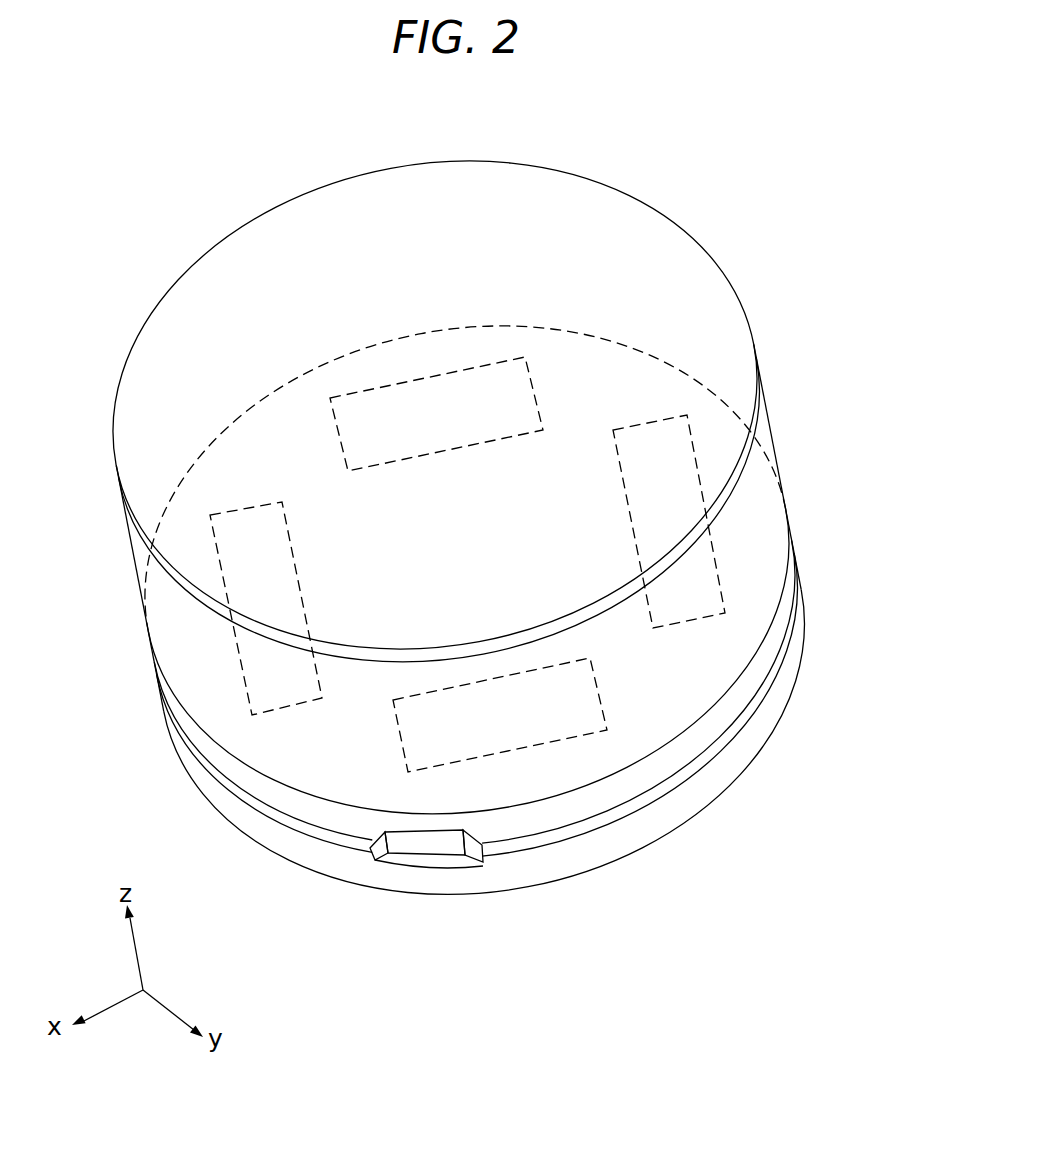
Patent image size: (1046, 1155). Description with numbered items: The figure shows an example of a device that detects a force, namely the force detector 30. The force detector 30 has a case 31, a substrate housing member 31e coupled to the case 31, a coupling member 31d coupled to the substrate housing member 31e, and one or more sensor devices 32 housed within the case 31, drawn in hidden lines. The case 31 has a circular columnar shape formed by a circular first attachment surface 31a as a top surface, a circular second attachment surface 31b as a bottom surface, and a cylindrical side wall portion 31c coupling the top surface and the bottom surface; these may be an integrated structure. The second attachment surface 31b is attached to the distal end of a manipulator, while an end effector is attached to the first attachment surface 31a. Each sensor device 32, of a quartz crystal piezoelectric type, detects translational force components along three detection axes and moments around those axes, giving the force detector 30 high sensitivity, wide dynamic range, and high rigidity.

The force detector 30 is at (670, 158).
The case 31 is at (728, 278).
The first attachment surface 31a is at (178, 341).
The second attachment surface 31b is at (765, 740).
The side wall portion 31c is at (757, 493).
The coupling member 31d is at (487, 901).
The substrate housing member 31e is at (580, 808).
The sensor device 32 is at (697, 571).